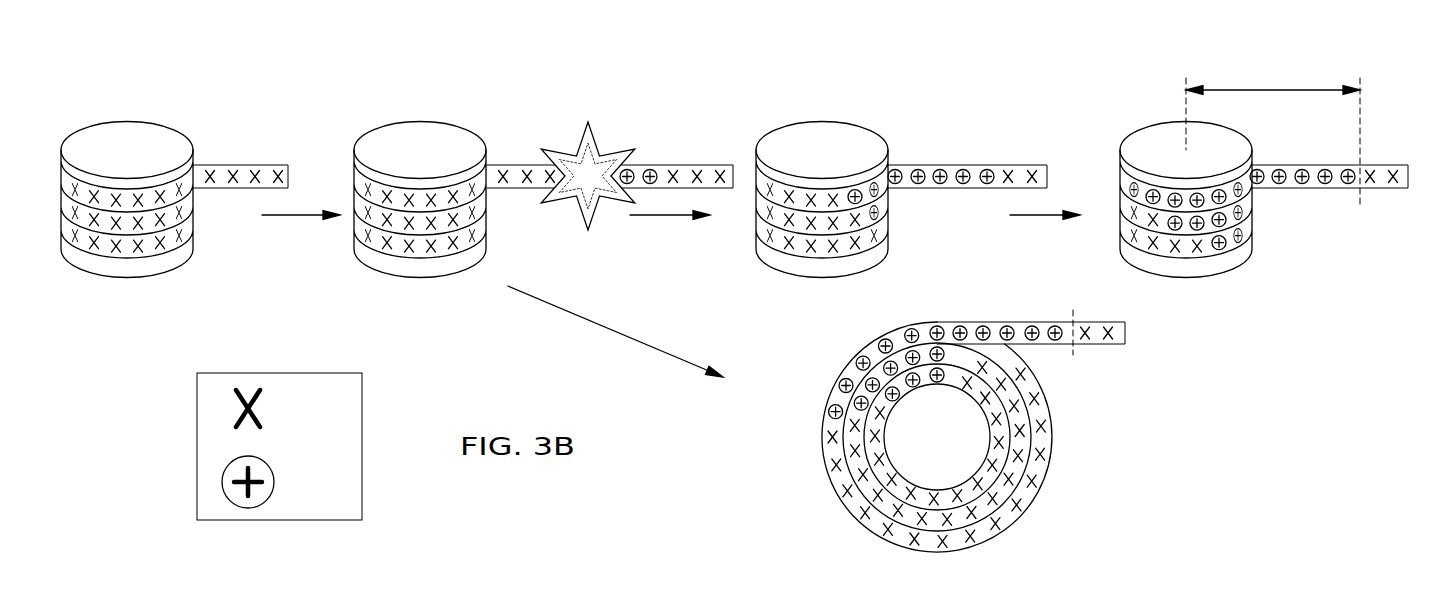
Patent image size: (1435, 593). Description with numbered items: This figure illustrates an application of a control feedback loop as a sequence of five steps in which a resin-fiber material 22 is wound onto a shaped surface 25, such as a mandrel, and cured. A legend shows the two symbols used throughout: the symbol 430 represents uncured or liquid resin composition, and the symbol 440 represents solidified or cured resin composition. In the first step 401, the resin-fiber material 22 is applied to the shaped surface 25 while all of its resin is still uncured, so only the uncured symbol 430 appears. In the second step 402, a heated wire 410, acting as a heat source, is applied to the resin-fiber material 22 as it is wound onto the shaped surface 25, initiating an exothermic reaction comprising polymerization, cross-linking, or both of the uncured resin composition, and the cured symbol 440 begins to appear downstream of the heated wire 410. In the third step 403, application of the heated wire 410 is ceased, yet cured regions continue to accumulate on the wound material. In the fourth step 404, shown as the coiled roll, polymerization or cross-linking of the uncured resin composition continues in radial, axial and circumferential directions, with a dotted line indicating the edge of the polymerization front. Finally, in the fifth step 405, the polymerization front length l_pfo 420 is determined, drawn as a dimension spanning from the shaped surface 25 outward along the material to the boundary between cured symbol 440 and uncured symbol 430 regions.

The resin-fiber material 22 is at (222, 189).
The shaped surface 25 is at (148, 138).
The first step 401 is at (224, 240).
The second step 402 is at (567, 238).
The third step 403 is at (942, 240).
The fourth step 404 is at (1022, 451).
The fifth step 405 is at (1288, 170).
The heated wire 410 is at (623, 150).
The l_pfo 420 is at (1297, 74).
The uncured or liquid resin composition 430 is at (283, 408).
The solidified or cured resin composition 440 is at (276, 482).